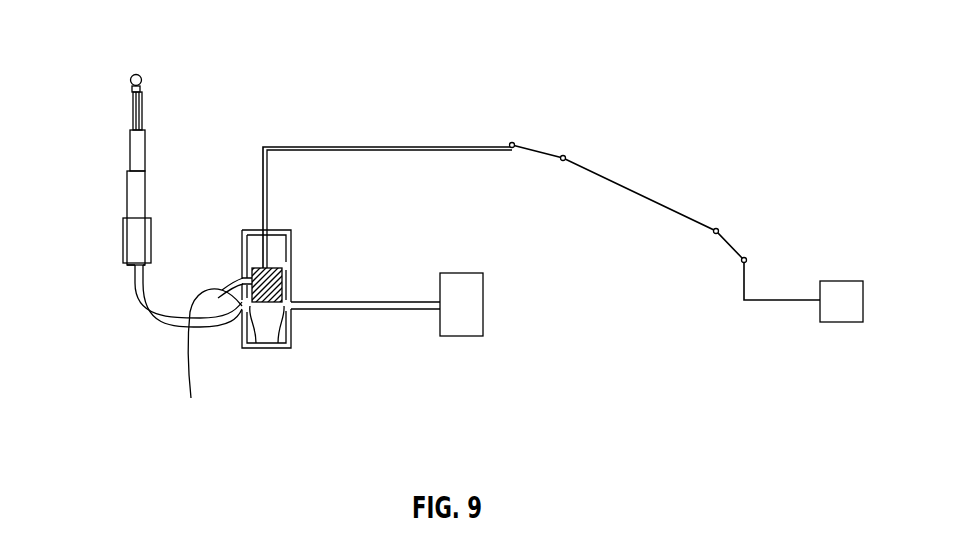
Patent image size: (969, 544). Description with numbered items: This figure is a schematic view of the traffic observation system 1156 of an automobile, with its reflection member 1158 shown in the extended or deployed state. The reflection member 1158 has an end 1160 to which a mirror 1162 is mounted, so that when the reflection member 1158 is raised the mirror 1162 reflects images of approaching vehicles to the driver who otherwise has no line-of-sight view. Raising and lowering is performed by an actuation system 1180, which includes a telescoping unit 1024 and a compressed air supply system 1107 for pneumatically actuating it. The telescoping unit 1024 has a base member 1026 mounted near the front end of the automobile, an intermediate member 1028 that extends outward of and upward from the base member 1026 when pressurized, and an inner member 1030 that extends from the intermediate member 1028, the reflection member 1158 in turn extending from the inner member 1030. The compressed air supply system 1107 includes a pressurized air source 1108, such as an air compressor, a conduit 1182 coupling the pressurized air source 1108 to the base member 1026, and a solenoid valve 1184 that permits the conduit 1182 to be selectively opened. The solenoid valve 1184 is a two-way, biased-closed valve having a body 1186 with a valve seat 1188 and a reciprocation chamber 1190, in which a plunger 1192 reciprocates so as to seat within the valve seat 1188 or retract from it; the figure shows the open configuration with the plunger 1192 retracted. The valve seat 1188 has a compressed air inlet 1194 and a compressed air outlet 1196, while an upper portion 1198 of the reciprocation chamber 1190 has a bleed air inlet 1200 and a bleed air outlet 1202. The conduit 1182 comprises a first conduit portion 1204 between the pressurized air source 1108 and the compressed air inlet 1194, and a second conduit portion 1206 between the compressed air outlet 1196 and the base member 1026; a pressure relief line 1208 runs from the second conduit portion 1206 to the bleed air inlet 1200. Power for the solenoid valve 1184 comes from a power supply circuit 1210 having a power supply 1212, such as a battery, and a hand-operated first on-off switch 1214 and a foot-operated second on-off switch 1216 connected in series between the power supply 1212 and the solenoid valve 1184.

The mirror 1162 is at (138, 74).
The end 1160 is at (146, 89).
The reflection member 1158 is at (132, 111).
The inner member 1030 is at (146, 141).
The telescoping unit 1024 is at (118, 156).
The intermediate member 1028 is at (126, 193).
The base member 1026 is at (122, 241).
The conduit 1182 is at (131, 287).
The second conduit portion 1206 is at (148, 317).
The pressure relief line 1208 is at (201, 351).
The actuation system 1180 is at (157, 357).
The bleed air inlet 1200 is at (242, 279).
The reciprocation chamber 1190 is at (237, 240).
The plunger 1192 is at (270, 267).
The solenoid valve 1184 is at (316, 197).
The body 1186 is at (284, 232).
The upper portion 1198 is at (286, 261).
The bleed air outlet 1202 is at (287, 285).
The compressed air inlet 1194 is at (287, 316).
The compressed air outlet 1196 is at (271, 356).
The valve seat 1188 is at (272, 350).
The compressed air supply system 1107 is at (372, 340).
The first conduit portion 1204 is at (407, 306).
The pressurized air source 1108 is at (480, 334).
The traffic observation system 1156 is at (276, 82).
The power supply circuit 1210 is at (618, 107).
The first on-off switch 1214 is at (542, 152).
The second on-off switch 1216 is at (733, 245).
The power supply 1212 is at (843, 322).